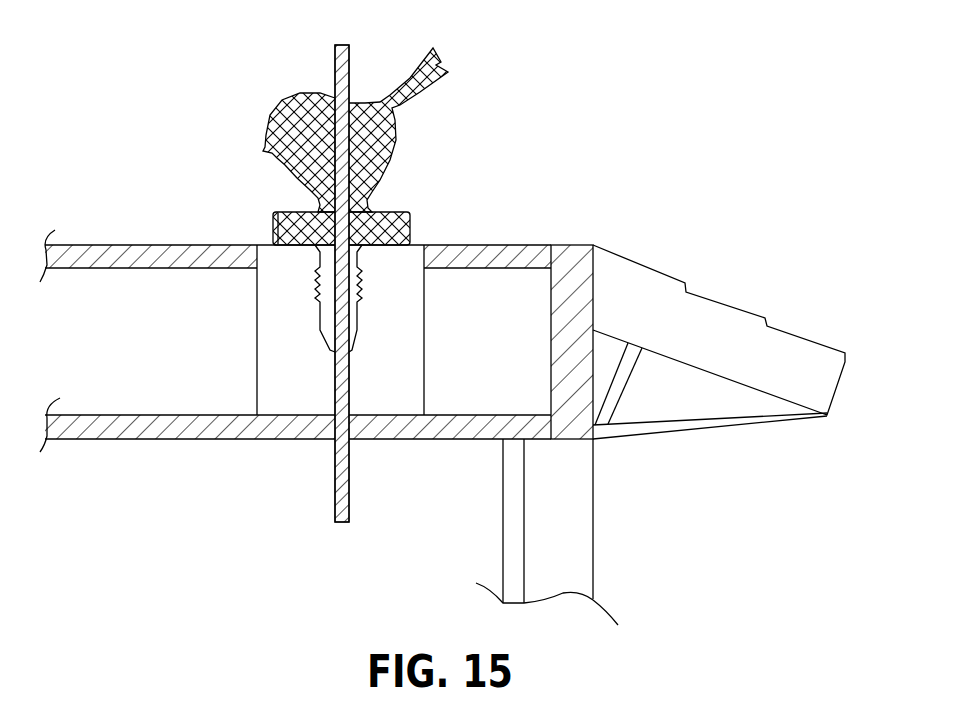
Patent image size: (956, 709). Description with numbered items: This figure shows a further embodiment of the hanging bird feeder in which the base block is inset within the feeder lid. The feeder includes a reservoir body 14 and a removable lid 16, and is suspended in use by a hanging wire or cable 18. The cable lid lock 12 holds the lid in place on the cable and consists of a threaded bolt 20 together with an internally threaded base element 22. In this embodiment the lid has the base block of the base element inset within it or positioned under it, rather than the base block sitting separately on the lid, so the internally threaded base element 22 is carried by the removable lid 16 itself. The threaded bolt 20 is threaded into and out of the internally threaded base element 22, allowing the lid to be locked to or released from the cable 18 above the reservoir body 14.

The cable lid lock 12 is at (451, 166).
The reservoir body 14 is at (580, 503).
The removable lid 16 is at (667, 277).
The hanging wire or cable 18 is at (352, 470).
The threaded bolt 20 is at (259, 207).
The internally threaded base element 22 is at (436, 346).